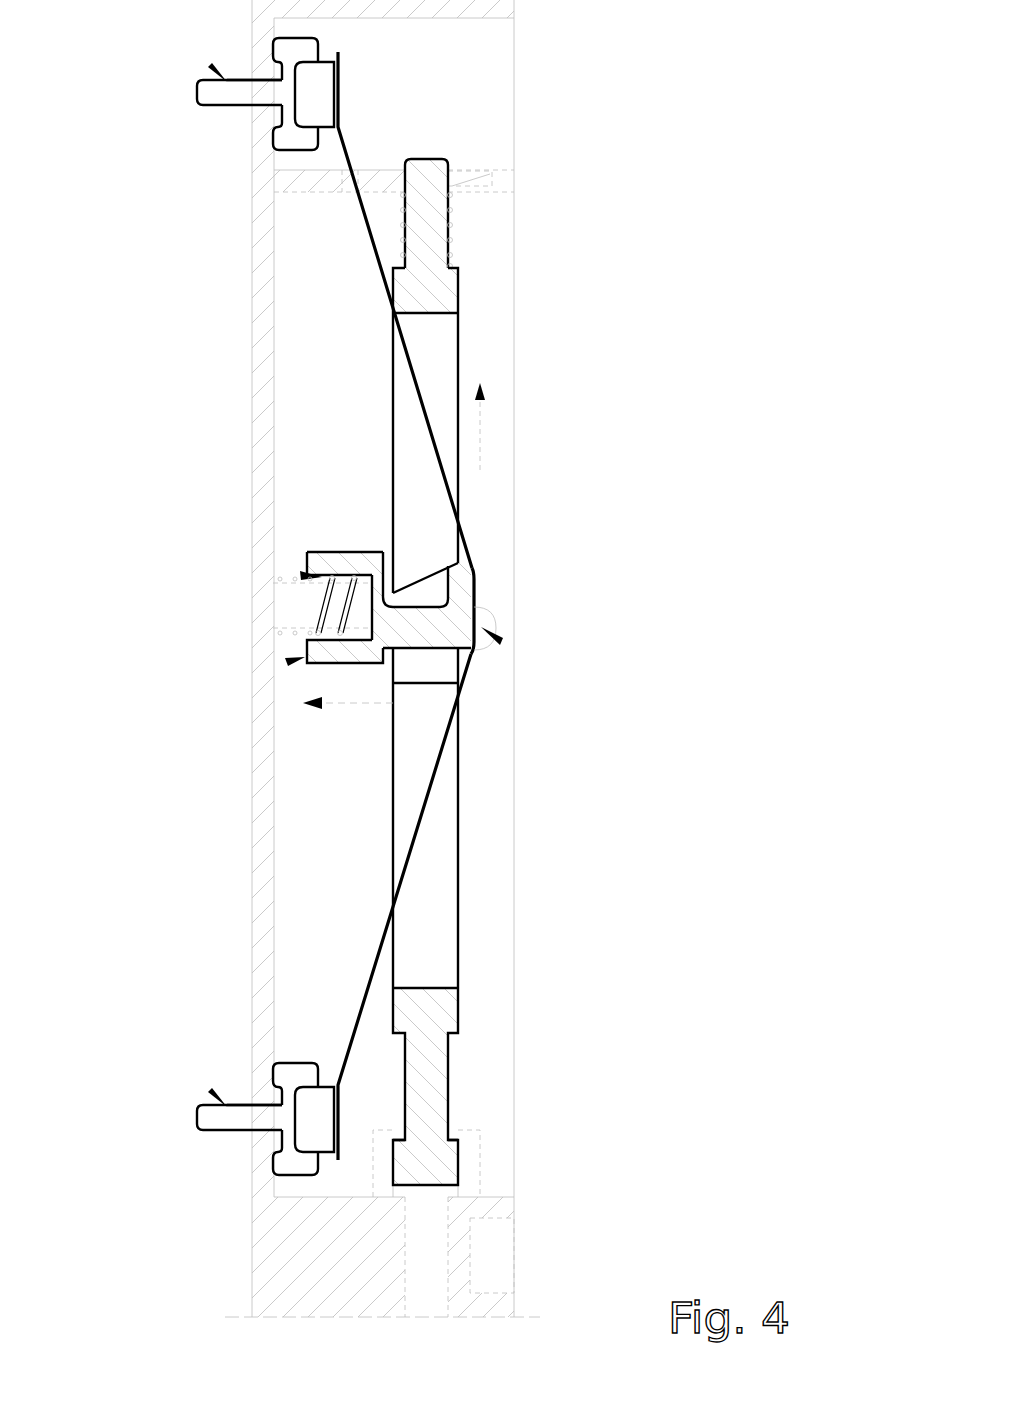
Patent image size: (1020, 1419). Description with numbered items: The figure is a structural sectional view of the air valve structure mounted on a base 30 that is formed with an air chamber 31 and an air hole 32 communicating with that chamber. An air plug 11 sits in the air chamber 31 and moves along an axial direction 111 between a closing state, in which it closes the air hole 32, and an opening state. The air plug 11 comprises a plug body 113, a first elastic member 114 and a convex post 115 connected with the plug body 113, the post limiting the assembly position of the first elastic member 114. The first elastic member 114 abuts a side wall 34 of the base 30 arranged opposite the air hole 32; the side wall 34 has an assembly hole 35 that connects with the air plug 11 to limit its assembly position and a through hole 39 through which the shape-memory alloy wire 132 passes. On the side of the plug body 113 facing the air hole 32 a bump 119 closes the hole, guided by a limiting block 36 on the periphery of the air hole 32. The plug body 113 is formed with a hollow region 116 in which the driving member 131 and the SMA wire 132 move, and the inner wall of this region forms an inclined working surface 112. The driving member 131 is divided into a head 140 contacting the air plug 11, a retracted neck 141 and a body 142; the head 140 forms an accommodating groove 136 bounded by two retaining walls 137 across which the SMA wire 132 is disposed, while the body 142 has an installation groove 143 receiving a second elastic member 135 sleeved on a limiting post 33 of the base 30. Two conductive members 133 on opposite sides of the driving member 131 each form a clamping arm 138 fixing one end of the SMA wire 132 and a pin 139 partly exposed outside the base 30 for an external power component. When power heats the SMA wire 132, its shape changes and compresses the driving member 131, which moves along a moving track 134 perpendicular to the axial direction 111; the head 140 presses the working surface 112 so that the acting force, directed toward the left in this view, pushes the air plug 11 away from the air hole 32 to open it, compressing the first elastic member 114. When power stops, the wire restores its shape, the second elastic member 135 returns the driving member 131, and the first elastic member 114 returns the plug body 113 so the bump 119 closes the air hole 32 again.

The air plug 11 is at (513, 621).
The axial direction 111 is at (482, 412).
The working surface 112 is at (418, 575).
The plug body 113 is at (462, 340).
The first elastic member 114 is at (455, 240).
The convex post 115 is at (430, 160).
The hollow region 116 is at (464, 922).
The bump 119 is at (478, 1148).
The base 30 is at (252, 1310).
The air chamber 31 is at (508, 826).
The air hole 32 is at (458, 1268).
The limiting post 33 is at (320, 607).
The side wall 34 is at (492, 178).
The assembly hole 35 is at (472, 178).
The limiting block 36 is at (470, 1172).
The through hole 39 is at (290, 197).
The driving member 131 is at (287, 660).
The shape-memory alloy wire 132 is at (368, 240).
The conductive member 133 is at (210, 72).
The moving track 134 is at (385, 705).
The second elastic member 135 is at (273, 643).
The accommodating groove 136 is at (502, 642).
The retaining wall 137 is at (487, 612).
The clamping arm 138 is at (268, 107).
The pin 139 is at (280, 95).
The head 140 is at (476, 574).
The neck 141 is at (476, 650).
The body 142 is at (318, 552).
The installation groove 143 is at (300, 575).